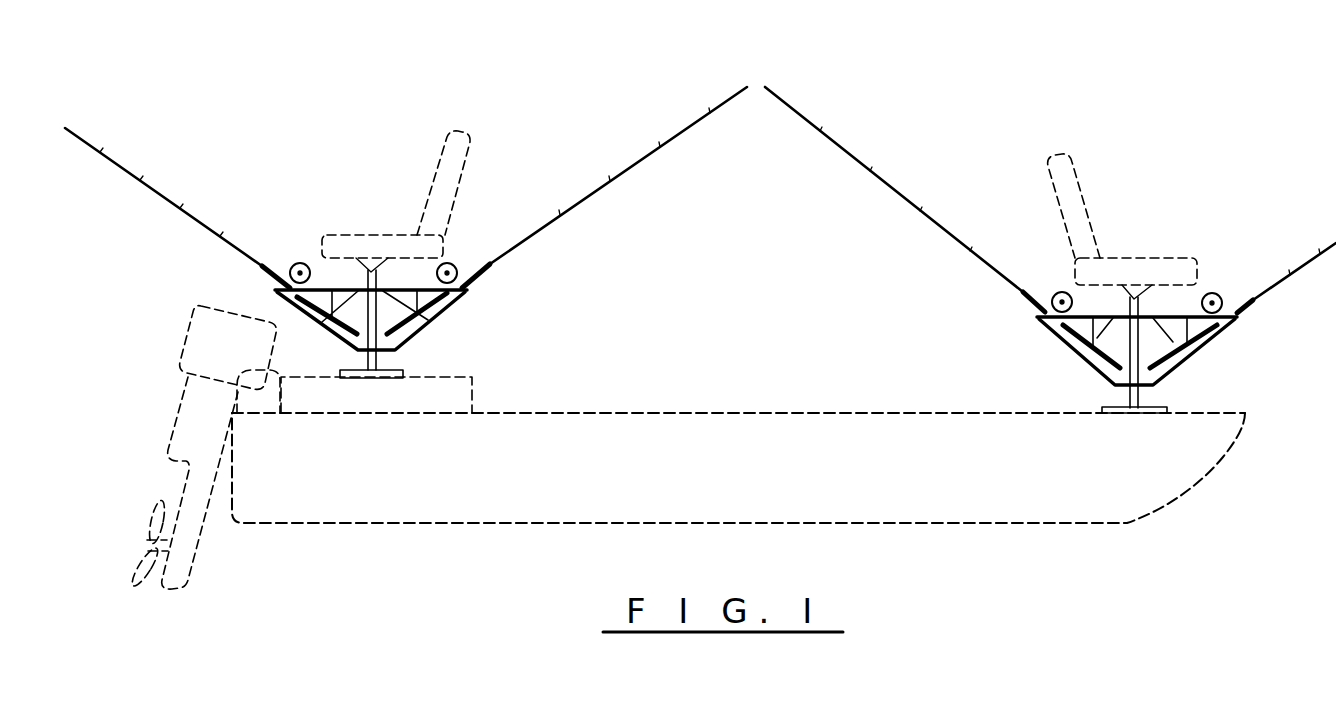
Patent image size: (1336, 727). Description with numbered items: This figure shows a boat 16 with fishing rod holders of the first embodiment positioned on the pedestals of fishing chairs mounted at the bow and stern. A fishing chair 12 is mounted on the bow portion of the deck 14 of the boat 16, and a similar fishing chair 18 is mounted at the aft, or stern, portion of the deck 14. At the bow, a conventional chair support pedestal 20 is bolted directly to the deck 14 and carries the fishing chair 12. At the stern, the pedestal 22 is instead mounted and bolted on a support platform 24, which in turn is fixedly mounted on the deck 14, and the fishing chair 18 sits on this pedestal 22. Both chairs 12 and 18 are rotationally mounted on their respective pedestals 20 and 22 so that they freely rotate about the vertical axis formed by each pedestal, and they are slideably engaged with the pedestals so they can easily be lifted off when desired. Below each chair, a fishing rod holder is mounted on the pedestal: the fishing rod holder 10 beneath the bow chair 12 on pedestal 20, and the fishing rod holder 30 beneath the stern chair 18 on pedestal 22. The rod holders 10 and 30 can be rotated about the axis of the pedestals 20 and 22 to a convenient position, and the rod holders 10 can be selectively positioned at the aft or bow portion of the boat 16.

The fishing rod holder 10 is at (1208, 349).
The fishing chair 12 is at (1155, 260).
The deck 14 is at (742, 413).
The boat 16 is at (943, 510).
The fishing chair 18 is at (368, 234).
The chair support pedestal 20 is at (1137, 303).
The pedestal 22 is at (383, 280).
The support platform 24 is at (472, 377).
The fishing rod holder 30 is at (455, 312).